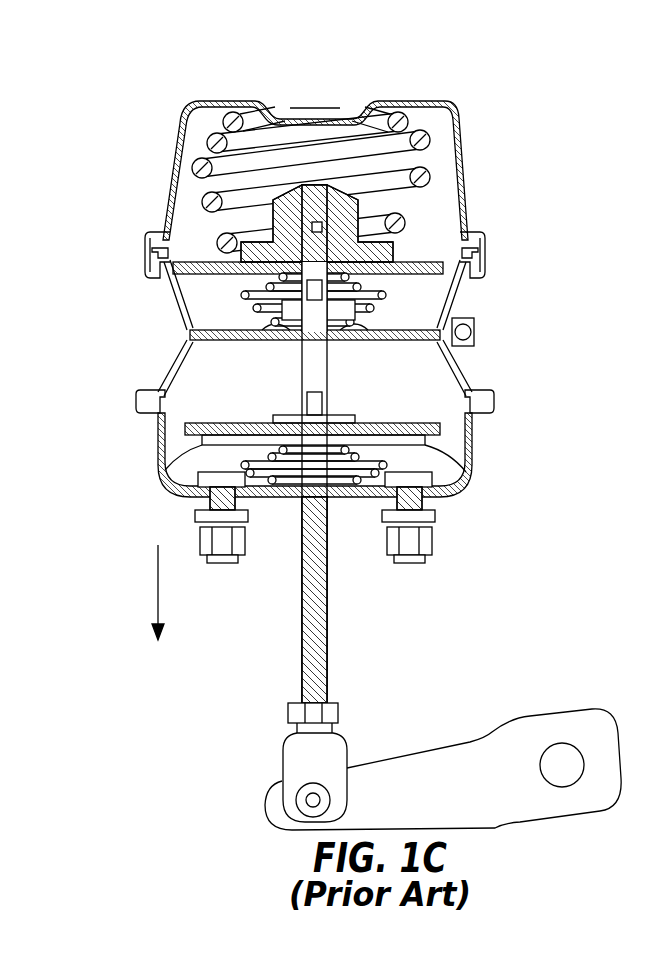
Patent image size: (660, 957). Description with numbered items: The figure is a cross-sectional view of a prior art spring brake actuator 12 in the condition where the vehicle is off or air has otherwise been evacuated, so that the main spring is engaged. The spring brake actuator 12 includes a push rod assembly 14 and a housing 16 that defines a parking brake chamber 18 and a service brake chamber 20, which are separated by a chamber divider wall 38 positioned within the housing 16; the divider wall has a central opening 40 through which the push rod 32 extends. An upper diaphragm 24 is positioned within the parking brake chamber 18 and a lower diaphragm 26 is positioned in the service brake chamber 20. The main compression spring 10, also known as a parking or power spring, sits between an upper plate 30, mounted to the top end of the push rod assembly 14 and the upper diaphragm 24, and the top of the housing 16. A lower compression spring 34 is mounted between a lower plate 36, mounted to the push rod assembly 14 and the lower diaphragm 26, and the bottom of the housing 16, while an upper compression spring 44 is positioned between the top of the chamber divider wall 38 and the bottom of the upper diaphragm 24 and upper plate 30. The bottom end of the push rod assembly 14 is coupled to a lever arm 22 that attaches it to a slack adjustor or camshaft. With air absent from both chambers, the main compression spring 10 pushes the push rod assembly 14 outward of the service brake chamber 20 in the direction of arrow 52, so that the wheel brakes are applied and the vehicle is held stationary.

The spring brake actuator 12 is at (220, 46).
The main compression spring 10 is at (428, 122).
The housing 16 is at (468, 169).
The upper compression spring 44 is at (478, 247).
The upper plate 30 is at (165, 237).
The upper diaphragm 24 is at (165, 275).
The chamber divider wall 38 is at (195, 346).
The central opening 40 is at (290, 332).
The parking brake chamber 18 is at (438, 293).
The service brake chamber 20 is at (440, 378).
The lower diaphragm 26 is at (170, 440).
The push rod 32 is at (323, 357).
The lower plate 36 is at (423, 472).
The lower compression spring 34 is at (427, 508).
The push rod assembly 14 is at (296, 587).
The arrow 52 is at (158, 592).
The lever arm 22 is at (390, 765).